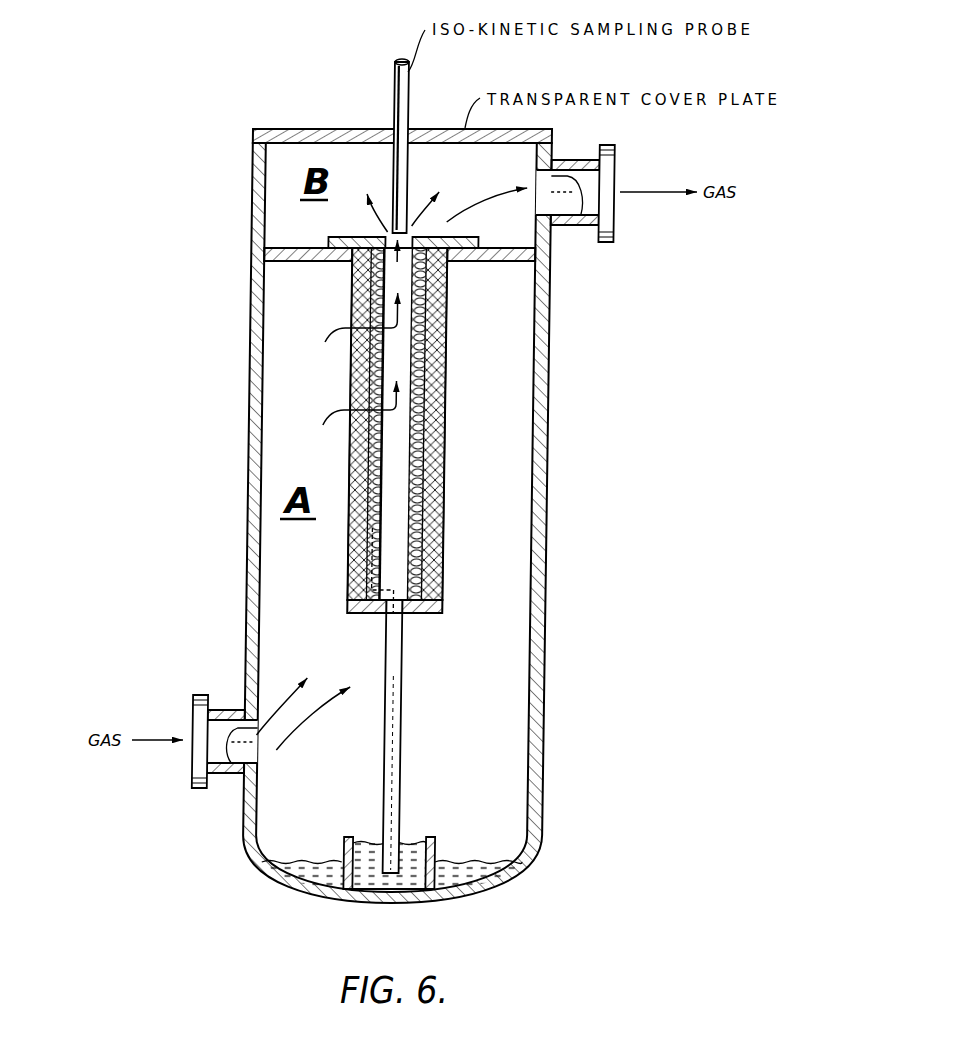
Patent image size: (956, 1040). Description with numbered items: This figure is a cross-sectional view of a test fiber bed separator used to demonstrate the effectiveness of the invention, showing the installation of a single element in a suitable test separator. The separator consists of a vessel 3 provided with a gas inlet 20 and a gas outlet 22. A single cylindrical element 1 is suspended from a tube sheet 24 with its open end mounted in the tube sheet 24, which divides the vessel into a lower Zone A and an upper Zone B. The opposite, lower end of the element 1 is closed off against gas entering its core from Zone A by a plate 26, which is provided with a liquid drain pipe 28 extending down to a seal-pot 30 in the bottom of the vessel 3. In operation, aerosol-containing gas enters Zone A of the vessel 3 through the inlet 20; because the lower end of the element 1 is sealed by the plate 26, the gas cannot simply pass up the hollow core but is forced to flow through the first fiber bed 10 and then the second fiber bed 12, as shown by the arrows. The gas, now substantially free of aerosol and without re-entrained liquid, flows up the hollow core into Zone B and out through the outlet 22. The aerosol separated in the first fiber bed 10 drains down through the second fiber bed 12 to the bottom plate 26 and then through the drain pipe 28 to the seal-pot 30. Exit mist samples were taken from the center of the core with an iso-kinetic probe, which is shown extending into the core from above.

The cylindrical element 1 is at (447, 428).
The vessel 3 is at (545, 558).
The first fiber bed 10 is at (440, 473).
The second fiber bed 12 is at (430, 519).
The gas inlet 20 is at (193, 710).
The gas outlet 22 is at (615, 173).
The tube sheet 24 is at (478, 262).
The plate 26 is at (418, 614).
The liquid drain pipe 28 is at (401, 705).
The seal-pot 30 is at (435, 842).